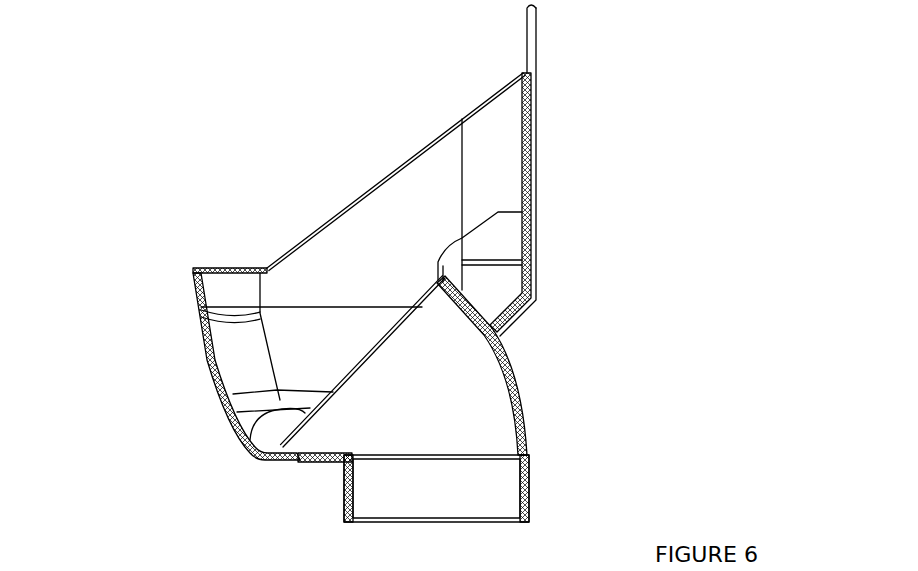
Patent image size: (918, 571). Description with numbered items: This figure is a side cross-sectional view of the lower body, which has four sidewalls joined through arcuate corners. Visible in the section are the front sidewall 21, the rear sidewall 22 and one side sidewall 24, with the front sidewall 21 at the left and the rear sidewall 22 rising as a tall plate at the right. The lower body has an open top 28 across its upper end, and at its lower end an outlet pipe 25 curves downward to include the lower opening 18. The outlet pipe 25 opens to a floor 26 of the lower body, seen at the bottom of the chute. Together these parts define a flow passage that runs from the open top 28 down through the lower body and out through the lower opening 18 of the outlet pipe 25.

The lower opening 18 is at (419, 522).
The front sidewall 21 is at (203, 355).
The rear sidewall 22 is at (536, 189).
The side sidewall 24 is at (323, 272).
The outlet pipe 25 is at (522, 397).
The floor 26 is at (257, 438).
The open top 28 is at (367, 173).